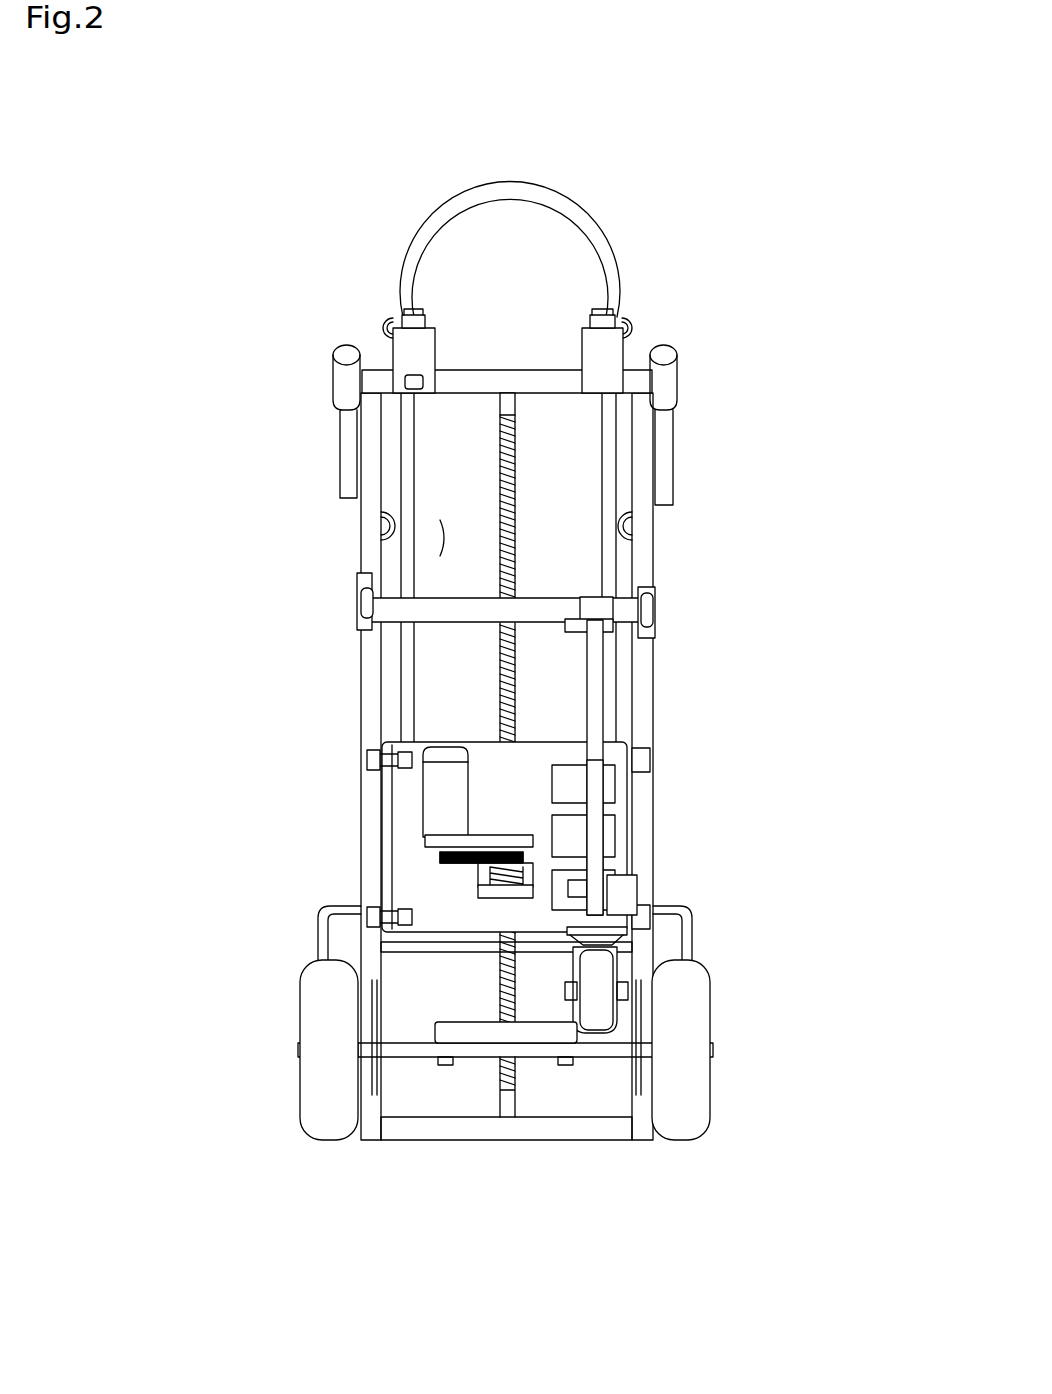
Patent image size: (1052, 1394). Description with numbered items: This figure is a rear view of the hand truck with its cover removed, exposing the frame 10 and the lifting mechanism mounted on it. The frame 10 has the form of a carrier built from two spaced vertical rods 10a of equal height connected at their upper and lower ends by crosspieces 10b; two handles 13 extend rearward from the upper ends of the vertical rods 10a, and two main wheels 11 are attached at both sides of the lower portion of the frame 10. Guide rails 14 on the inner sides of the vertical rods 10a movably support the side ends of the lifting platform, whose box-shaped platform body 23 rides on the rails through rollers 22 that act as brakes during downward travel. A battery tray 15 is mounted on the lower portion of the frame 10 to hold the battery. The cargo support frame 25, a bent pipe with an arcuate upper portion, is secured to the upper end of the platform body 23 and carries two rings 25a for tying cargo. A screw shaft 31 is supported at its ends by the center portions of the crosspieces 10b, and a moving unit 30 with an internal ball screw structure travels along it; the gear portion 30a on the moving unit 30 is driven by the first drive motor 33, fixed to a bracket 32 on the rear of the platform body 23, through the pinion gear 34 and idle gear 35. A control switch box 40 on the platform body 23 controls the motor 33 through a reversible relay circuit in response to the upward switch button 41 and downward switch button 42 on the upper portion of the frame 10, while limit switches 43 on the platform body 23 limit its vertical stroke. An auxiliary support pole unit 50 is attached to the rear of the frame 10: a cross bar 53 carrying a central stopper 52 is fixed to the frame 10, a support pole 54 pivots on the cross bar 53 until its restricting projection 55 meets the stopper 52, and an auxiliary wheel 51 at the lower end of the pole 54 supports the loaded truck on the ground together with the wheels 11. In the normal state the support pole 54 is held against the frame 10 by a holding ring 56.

The frame 10 is at (657, 542).
The vertical rods 10a is at (370, 1120).
The crosspieces 10b is at (505, 377).
The wheels 11 is at (692, 1105).
The handles 13 is at (668, 382).
The guide rails 14 is at (635, 685).
The battery tray 15 is at (473, 1030).
The rollers 22 is at (645, 762).
The platform body 23 is at (430, 738).
The cargo support frame 25 is at (563, 202).
The rings 25a is at (380, 323).
The moving unit 30 is at (530, 855).
The gear portion 30a is at (527, 860).
The screw shaft 31 is at (498, 570).
The bracket 32 is at (425, 843).
The first drive motor 33 is at (430, 787).
The pinion gear 34 is at (457, 860).
The idle gear 35 is at (477, 887).
The control switch box 40 is at (575, 787).
The upward switch button 41 is at (607, 313).
The downward switch button 42 is at (410, 315).
The limit switches 43 is at (405, 383).
The auxiliary support pole unit 50 is at (597, 612).
The auxiliary wheel 51 is at (595, 978).
The stopper 52 is at (470, 603).
The cross bar 53 is at (357, 610).
The support pole 54 is at (600, 738).
The restricting projection 55 is at (652, 630).
The holding ring 56 is at (628, 898).